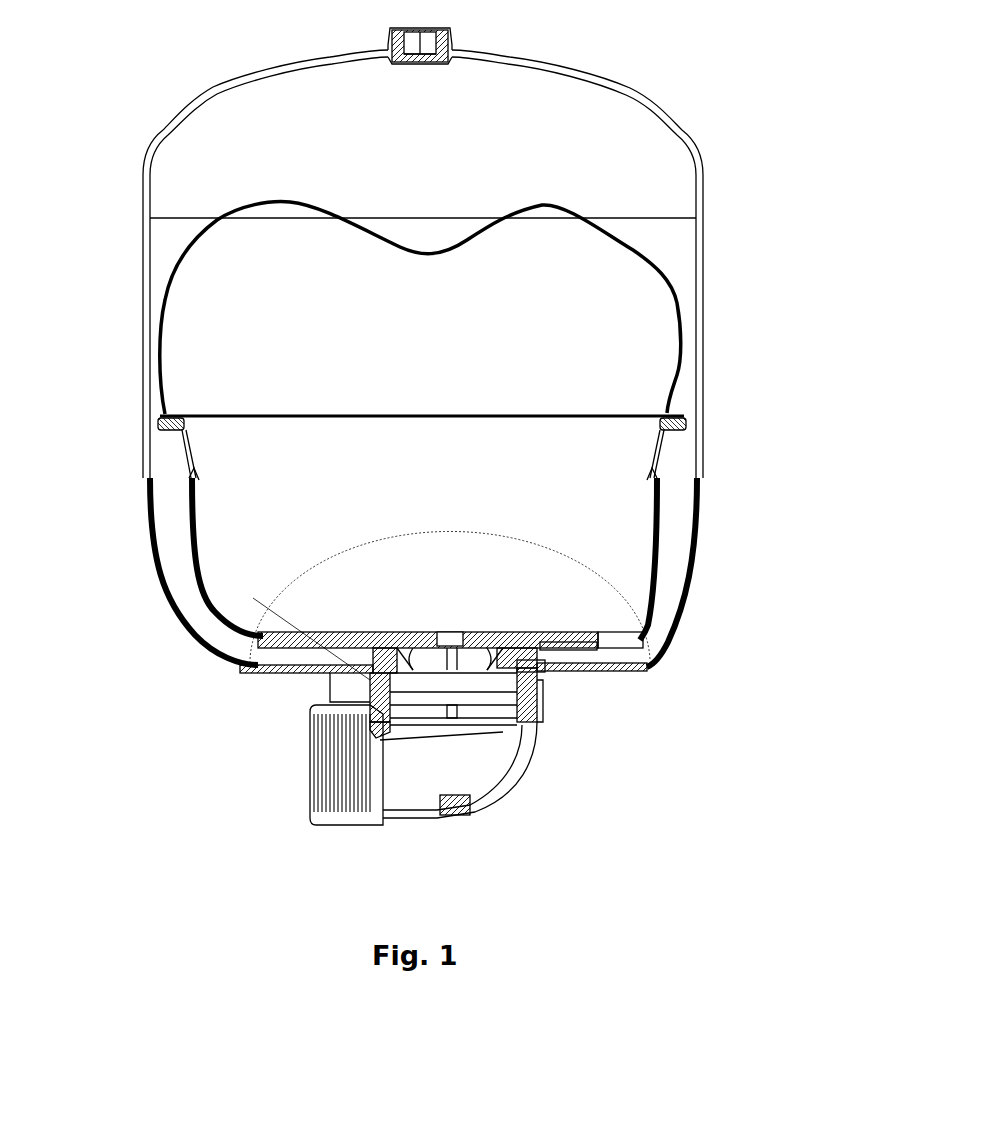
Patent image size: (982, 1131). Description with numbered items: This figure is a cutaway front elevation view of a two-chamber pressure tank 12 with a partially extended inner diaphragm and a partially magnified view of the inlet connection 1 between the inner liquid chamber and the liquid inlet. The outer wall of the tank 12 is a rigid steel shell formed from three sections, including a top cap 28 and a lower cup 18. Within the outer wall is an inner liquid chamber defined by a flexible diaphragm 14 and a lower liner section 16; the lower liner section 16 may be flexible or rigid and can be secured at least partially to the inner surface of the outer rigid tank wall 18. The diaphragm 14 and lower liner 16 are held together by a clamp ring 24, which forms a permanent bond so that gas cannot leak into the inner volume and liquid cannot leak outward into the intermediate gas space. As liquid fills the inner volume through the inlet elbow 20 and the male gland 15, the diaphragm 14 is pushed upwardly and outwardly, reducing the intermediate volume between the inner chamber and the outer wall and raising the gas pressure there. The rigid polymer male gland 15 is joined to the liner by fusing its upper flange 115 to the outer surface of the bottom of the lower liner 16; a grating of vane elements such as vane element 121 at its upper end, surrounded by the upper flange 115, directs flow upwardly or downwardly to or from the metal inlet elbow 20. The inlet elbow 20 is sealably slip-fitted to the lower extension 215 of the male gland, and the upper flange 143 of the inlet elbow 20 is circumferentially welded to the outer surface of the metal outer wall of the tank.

The connection device 1 is at (363, 694).
The tank 12 is at (707, 360).
The flexible diaphragm 14 is at (676, 380).
The male gland 15 is at (410, 630).
The lower liner section 16 is at (661, 571).
The lower cup 18 is at (699, 532).
The inlet elbow 20 is at (502, 768).
The clamp ring 24 is at (165, 424).
The top cap 28 is at (638, 86).
The upper flange 115 is at (545, 645).
The vane element 121 is at (519, 672).
The upper flange of the inlet elbow 143 is at (340, 683).
The lower extension 215 is at (522, 700).